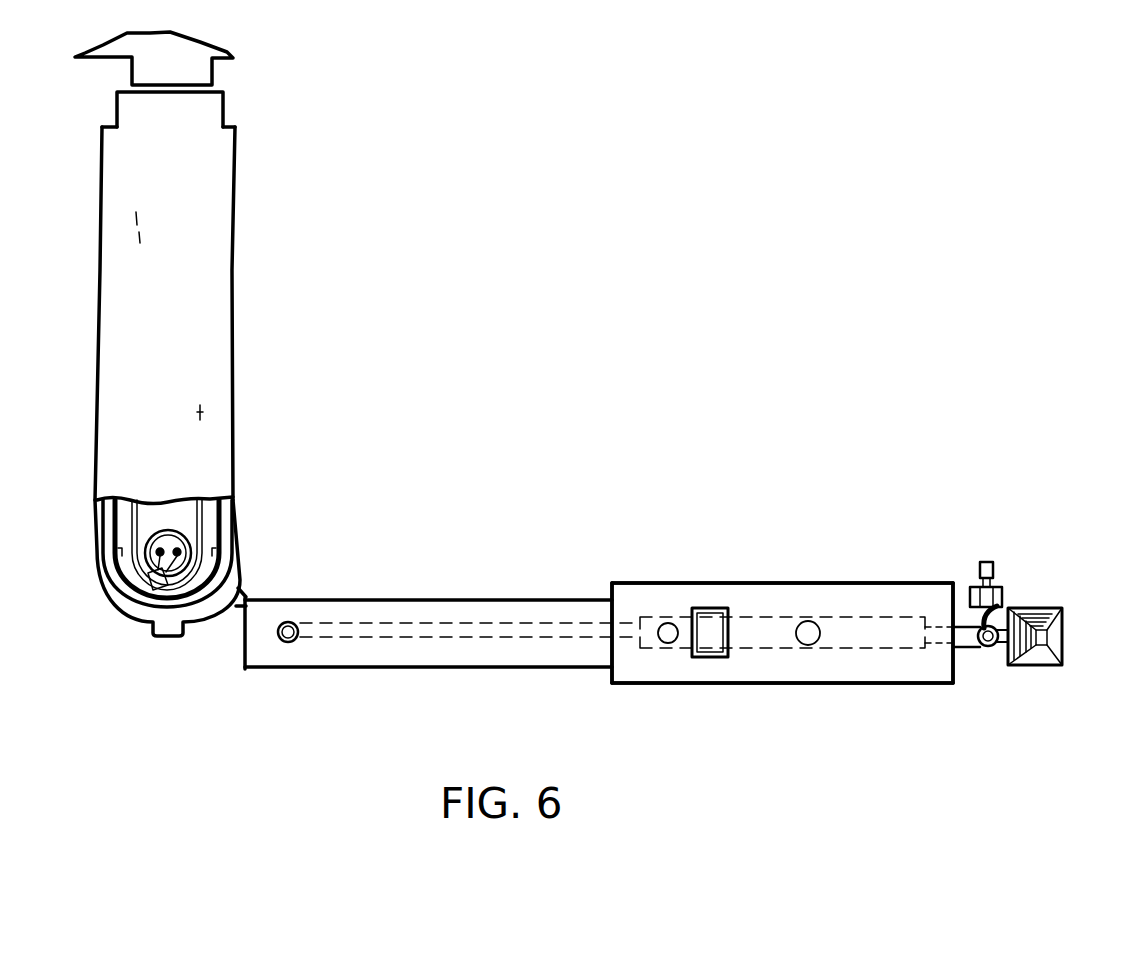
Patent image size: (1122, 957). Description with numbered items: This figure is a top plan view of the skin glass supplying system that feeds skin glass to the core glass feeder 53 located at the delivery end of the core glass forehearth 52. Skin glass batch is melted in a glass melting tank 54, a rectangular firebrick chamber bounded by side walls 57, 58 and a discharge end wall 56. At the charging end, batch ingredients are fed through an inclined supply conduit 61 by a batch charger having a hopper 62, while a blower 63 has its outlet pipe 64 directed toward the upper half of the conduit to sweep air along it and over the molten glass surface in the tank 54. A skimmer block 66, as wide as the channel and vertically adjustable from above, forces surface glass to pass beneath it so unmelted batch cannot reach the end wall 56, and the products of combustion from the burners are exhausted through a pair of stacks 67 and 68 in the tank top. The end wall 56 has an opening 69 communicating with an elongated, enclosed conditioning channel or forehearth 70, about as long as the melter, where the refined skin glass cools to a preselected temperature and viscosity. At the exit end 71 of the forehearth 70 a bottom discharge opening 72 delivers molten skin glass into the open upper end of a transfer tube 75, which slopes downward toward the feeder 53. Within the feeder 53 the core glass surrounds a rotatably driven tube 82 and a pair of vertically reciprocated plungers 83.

The forehearth 52 is at (245, 356).
The feeder 53 is at (163, 640).
The glass melting tank 54 is at (917, 578).
The end wall 56 is at (619, 676).
The side wall 57 is at (837, 600).
The side wall 58 is at (878, 670).
The supply conduit 61 is at (962, 650).
The hopper 62 is at (1055, 632).
The blower 63 is at (1000, 606).
The outlet pipe 64 is at (1008, 612).
The skimmer block 66 is at (712, 652).
The stack 67 is at (805, 623).
The stack 68 is at (668, 623).
The opening 69 is at (650, 613).
The conditioning channel 70 is at (432, 650).
The exit end 71 is at (236, 665).
The bottom discharge opening 72 is at (291, 621).
The transfer tube 75 is at (248, 592).
The tube 82 is at (178, 540).
The plungers 83 is at (160, 580).